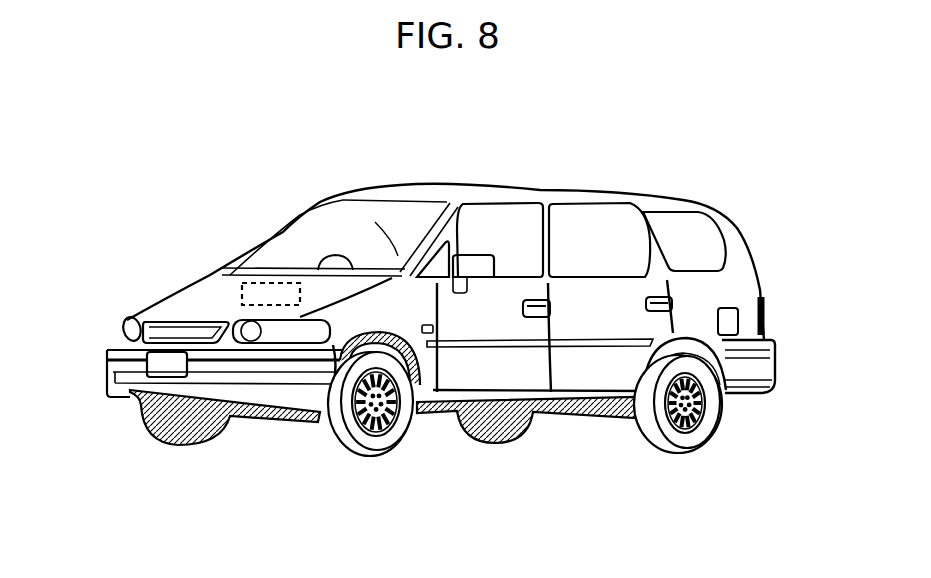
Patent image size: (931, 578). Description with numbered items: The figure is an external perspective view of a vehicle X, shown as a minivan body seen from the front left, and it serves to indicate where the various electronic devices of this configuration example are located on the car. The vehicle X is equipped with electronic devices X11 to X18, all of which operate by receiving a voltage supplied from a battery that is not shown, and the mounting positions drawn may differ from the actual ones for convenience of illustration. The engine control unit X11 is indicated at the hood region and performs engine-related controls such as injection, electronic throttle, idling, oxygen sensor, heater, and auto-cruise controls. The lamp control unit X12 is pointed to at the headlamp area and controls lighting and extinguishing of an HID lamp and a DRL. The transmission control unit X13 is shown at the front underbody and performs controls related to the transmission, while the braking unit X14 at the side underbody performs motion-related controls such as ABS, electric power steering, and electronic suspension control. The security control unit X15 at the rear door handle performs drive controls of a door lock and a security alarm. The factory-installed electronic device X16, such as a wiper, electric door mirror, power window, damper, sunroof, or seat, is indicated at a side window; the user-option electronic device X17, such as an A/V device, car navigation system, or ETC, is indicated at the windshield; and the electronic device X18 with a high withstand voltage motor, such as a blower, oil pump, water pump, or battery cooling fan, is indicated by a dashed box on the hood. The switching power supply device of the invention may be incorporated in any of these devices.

The vehicle X is at (90, 138).
The engine control unit X11 is at (213, 297).
The lamp control unit X12 is at (120, 317).
The transmission control unit X13 is at (303, 420).
The braking unit X14 is at (623, 417).
The security control unit X15 is at (670, 307).
The electronic device built in at factory shipment X16 is at (607, 220).
The electronic device mounted as user option X17 is at (368, 258).
The electronic device provided with high withstand voltage motor X18 is at (250, 283).